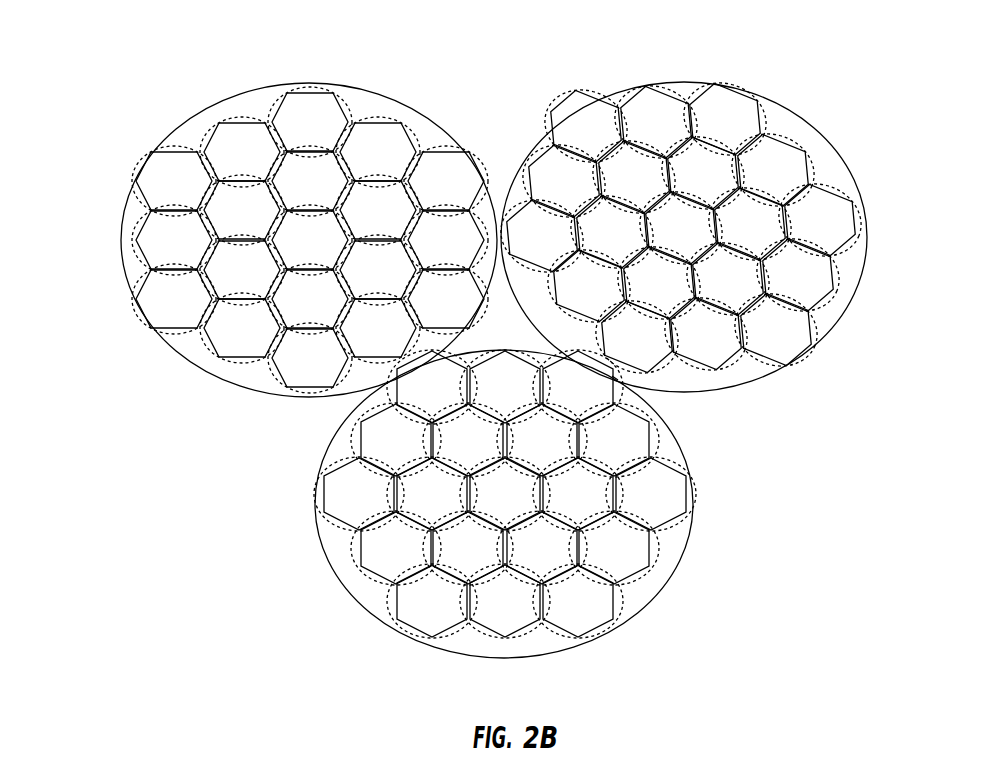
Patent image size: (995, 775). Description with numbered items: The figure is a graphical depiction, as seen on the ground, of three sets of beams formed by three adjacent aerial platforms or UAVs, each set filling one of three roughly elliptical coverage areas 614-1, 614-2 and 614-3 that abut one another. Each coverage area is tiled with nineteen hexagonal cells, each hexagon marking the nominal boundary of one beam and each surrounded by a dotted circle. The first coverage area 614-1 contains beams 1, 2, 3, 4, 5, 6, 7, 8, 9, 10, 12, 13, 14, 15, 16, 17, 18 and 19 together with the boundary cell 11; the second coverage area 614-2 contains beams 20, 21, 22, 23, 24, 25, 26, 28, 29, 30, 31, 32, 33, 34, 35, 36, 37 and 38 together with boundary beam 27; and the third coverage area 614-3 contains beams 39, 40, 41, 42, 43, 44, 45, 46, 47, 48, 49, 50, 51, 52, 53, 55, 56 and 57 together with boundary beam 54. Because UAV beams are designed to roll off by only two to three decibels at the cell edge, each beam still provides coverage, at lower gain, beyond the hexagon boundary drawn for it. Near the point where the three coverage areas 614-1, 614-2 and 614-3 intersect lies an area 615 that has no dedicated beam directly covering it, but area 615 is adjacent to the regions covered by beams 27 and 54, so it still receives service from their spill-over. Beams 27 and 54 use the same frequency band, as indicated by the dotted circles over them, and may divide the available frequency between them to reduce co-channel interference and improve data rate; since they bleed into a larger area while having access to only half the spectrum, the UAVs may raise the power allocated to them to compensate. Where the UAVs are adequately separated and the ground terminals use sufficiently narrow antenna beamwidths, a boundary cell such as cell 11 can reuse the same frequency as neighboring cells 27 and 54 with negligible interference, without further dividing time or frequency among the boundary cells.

The coverage area 614-1 is at (136, 185).
The coverage area 614-2 is at (598, 87).
The coverage area 614-3 is at (325, 560).
The area near the intersection of the coverage areas 615 is at (615, 378).
The beam 1 is at (310, 240).
The beam 2 is at (310, 299).
The beam 3 is at (378, 270).
The beam 4 is at (378, 210).
The beam 5 is at (310, 181).
The beam 6 is at (242, 210).
The beam 7 is at (242, 270).
The beam 8 is at (242, 328).
The beam 9 is at (310, 358).
The beam 10 is at (378, 328).
The cell 11 is at (446, 299).
The beam 12 is at (446, 240).
The beam 13 is at (446, 181).
The beam 14 is at (378, 152).
The beam 15 is at (310, 122).
The beam 16 is at (242, 152).
The beam 17 is at (174, 181).
The beam 18 is at (174, 240).
The beam 19 is at (174, 299).
The beam 20 is at (681, 228).
The beam 21 is at (659, 283).
The beam 22 is at (728, 279).
The beam 23 is at (750, 224).
The beam 24 is at (703, 173).
The beam 25 is at (634, 177).
The beam 26 is at (612, 232).
The boundary beam 27 is at (589, 286).
The beam 28 is at (637, 337).
The beam 29 is at (706, 334).
The beam 30 is at (776, 330).
The beam 31 is at (798, 275).
The beam 32 is at (820, 220).
The beam 33 is at (773, 170).
The beam 34 is at (725, 119).
The beam 35 is at (656, 122).
The beam 36 is at (586, 126).
The beam 37 is at (564, 181).
The beam 38 is at (542, 236).
The beam 39 is at (505, 494).
The beam 40 is at (468, 548).
The beam 41 is at (542, 548).
The beam 42 is at (578, 494).
The beam 43 is at (542, 440).
The beam 44 is at (468, 440).
The beam 45 is at (432, 494).
The beam 46 is at (396, 548).
The beam 47 is at (432, 601).
The beam 48 is at (505, 601).
The beam 49 is at (578, 601).
The beam 50 is at (614, 548).
The beam 51 is at (651, 494).
The beam 52 is at (614, 440).
The beam 53 is at (578, 387).
The boundary beam 54 is at (505, 387).
The beam 55 is at (432, 387).
The beam 56 is at (396, 440).
The beam 57 is at (359, 494).